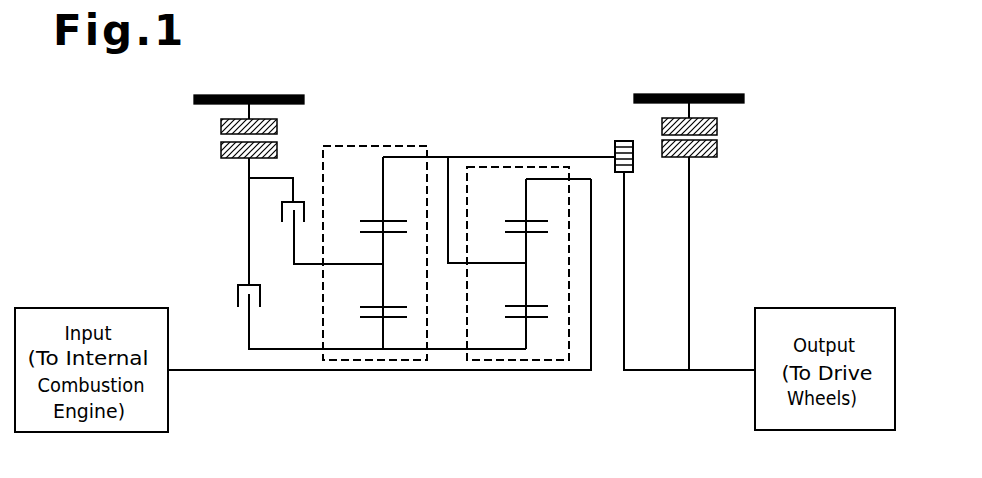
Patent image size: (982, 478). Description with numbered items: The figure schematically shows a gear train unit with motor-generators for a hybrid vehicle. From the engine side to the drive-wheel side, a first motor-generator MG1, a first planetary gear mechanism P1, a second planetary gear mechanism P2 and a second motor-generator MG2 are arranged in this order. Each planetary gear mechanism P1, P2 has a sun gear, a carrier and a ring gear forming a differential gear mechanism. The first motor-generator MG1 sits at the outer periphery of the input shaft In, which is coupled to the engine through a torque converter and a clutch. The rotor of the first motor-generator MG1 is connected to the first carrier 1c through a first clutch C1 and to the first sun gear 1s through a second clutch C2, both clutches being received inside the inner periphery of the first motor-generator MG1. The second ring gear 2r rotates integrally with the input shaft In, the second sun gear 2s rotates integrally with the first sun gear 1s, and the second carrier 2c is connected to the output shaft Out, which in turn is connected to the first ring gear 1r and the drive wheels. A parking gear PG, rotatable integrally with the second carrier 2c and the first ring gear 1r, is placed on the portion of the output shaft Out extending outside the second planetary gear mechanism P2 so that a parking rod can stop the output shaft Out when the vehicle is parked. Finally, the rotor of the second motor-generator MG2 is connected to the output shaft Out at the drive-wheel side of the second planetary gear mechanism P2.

The first motor-generator MG1 is at (235, 190).
The second motor-generator MG2 is at (702, 232).
The first clutch C1 is at (281, 212).
The second clutch C2 is at (238, 296).
The first planetary gear mechanism P1 is at (367, 145).
The second planetary gear mechanism P2 is at (515, 165).
The first ring gear 1r is at (383, 200).
The first carrier 1c is at (383, 286).
The first sun gear 1s is at (383, 337).
The second ring gear 2r is at (526, 200).
The second carrier 2c is at (526, 286).
The second sun gear 2s is at (526, 337).
The parking gear PG is at (622, 141).
The input shaft In is at (190, 371).
The output shaft Out is at (730, 371).